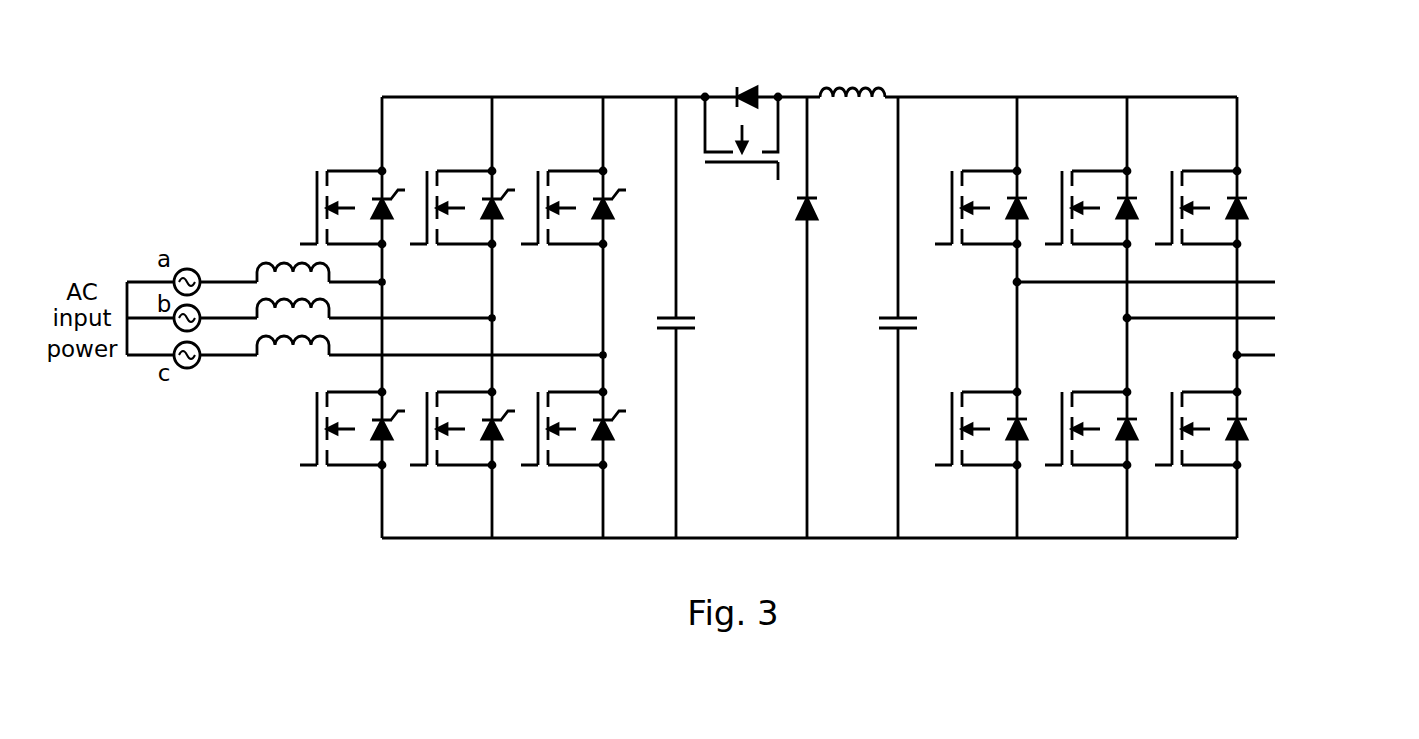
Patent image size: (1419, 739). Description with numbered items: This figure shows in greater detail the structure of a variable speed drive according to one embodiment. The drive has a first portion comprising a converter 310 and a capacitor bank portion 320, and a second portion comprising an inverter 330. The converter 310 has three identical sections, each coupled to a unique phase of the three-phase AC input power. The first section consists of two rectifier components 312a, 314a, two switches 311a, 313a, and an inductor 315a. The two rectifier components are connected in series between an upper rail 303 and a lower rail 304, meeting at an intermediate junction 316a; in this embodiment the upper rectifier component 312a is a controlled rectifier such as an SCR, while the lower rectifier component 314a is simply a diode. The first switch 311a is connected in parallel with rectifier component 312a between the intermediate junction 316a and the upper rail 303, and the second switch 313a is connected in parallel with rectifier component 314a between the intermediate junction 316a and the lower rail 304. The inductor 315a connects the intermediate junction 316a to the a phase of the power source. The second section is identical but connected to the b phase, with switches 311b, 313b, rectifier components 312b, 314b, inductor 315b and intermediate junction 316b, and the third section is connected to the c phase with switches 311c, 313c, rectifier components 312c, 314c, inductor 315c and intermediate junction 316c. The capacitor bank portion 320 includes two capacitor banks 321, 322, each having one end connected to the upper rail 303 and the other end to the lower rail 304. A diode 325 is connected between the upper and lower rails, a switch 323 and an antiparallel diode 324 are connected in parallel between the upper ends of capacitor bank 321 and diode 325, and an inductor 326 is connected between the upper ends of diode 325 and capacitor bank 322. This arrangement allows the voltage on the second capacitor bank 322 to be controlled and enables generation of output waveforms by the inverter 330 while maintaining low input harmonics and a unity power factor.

The upper rail 303 is at (654, 100).
The lower rail 304 is at (705, 538).
The converter 310 is at (340, 80).
The first switch 311a is at (308, 169).
The first switch 311b is at (435, 254).
The first switch 311c is at (545, 250).
The rectifier component 312a is at (393, 180).
The rectifier component 312b is at (503, 180).
The rectifier component 312c is at (620, 207).
The second switch 313a is at (321, 472).
The second switch 313b is at (431, 472).
The second switch 313c is at (541, 472).
The rectifier component 314a is at (392, 412).
The rectifier component 314b is at (502, 412).
The rectifier component 314c is at (612, 412).
The inductor 315a is at (287, 252).
The inductor 315b is at (250, 298).
The inductor 315c is at (280, 360).
The intermediate junction 316a is at (391, 283).
The intermediate junction 316b is at (486, 324).
The intermediate junction 316c is at (595, 348).
The capacitor bank portion 320 is at (653, 80).
The capacitor bank 321 is at (665, 309).
The capacitor bank 322 is at (880, 299).
The switch 323 is at (745, 174).
The antiparallel diode 324 is at (744, 84).
The diode 325 is at (794, 226).
The inductor 326 is at (858, 120).
The inverter 330 is at (980, 80).